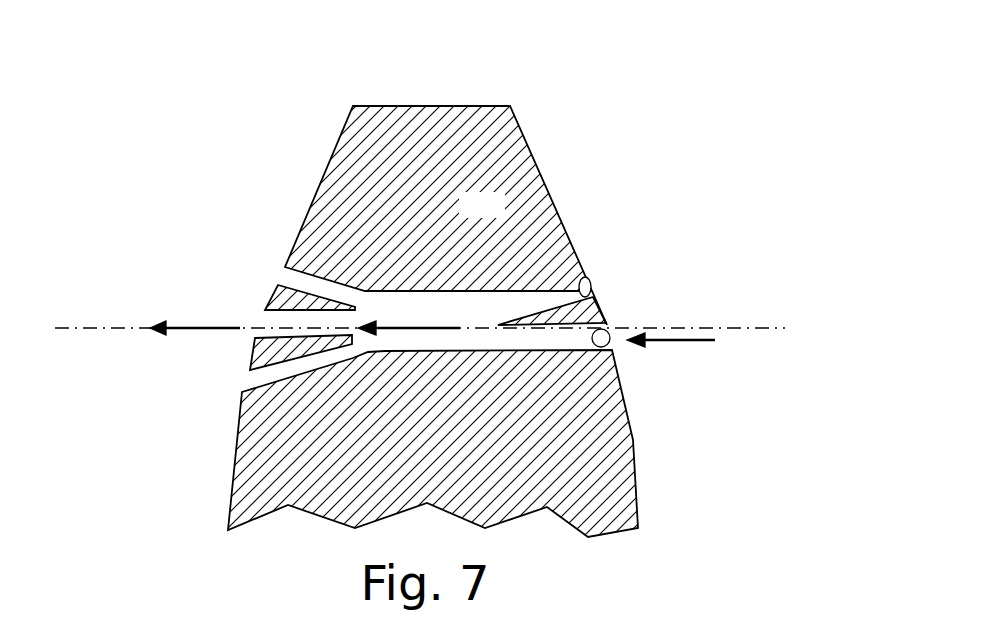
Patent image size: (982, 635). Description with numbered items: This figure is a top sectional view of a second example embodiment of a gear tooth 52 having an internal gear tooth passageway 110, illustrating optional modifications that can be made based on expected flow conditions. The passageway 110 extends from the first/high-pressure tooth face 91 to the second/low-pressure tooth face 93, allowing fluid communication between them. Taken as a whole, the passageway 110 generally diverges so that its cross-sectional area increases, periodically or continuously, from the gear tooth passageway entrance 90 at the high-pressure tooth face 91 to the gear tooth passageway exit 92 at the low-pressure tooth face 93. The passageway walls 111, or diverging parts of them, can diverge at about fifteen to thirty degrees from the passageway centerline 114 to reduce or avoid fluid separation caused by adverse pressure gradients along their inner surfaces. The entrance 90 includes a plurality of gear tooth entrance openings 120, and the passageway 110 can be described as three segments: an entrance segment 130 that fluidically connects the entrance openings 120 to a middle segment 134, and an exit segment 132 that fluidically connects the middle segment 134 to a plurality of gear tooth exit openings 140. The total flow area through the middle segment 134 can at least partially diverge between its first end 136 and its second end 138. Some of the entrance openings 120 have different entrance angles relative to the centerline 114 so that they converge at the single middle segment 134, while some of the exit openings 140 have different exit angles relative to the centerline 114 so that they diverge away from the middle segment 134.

The gear tooth 52 is at (726, 63).
The gear tooth passageway entrance 90 is at (625, 362).
The first/high-pressure tooth face 91 is at (553, 202).
The gear tooth passageway exit 92 is at (224, 355).
The second/low-pressure tooth face 93 is at (320, 185).
The gear tooth passageway 110 is at (513, 272).
The passageway walls 111 is at (366, 293).
The passageway centerline 114 is at (120, 328).
The gear tooth entrance openings 120 is at (587, 292).
The entrance segment 130 is at (537, 313).
The exit segment 132 is at (372, 312).
The middle segment 134 is at (449, 320).
The first end 136 is at (497, 325).
The second end 138 is at (352, 344).
The gear tooth exit openings 140 is at (288, 279).